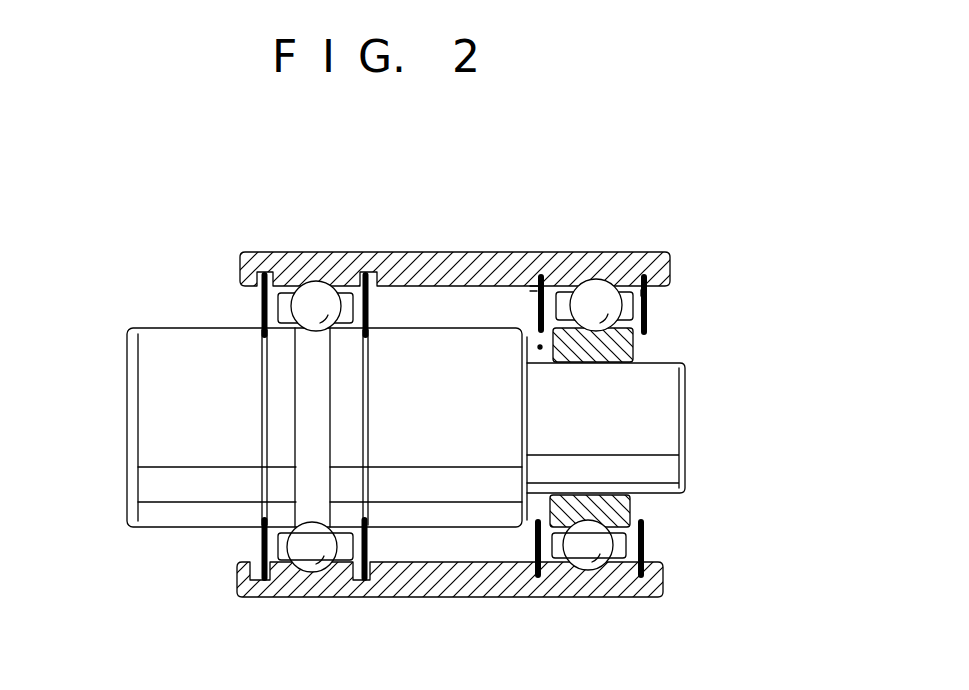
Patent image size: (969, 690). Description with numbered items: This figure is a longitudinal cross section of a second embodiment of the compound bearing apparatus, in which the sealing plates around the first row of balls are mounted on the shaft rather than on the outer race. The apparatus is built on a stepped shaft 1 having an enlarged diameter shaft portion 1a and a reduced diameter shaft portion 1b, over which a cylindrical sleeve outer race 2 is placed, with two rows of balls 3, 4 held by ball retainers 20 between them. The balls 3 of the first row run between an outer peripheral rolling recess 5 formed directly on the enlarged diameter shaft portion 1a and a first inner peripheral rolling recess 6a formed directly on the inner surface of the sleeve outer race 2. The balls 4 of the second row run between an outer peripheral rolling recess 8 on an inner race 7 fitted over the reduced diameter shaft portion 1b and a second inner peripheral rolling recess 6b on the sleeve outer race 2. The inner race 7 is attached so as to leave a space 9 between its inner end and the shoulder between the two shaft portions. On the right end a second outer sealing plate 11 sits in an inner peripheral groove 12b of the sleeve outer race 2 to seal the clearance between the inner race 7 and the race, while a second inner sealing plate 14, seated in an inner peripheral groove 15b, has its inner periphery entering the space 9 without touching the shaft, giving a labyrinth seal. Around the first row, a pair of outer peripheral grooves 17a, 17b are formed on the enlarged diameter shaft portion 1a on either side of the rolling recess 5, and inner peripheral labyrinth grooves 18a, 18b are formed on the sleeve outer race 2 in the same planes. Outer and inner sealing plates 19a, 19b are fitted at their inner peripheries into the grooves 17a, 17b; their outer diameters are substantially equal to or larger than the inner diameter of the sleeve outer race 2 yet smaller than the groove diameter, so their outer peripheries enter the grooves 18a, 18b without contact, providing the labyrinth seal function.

The stepped shaft 1 is at (407, 395).
The enlarged diameter shaft portion 1a is at (155, 385).
The reduced diameter shaft portion 1b is at (667, 412).
The sleeve outer race 2 is at (633, 262).
The balls of the first row 3 is at (268, 397).
The balls of the second row 4 is at (642, 357).
The outer peripheral rolling recess 5 is at (312, 482).
The first inner peripheral rolling recess 6a is at (321, 292).
The second inner peripheral rolling recess 6b is at (606, 290).
The inner race 7 is at (627, 347).
The outer peripheral rolling recess 8 is at (648, 318).
The space 9 is at (540, 347).
The second outer sealing plate 11 is at (620, 310).
The inner peripheral groove 12b is at (648, 295).
The second inner sealing plate 14 is at (537, 291).
The inner peripheral groove 15b is at (538, 288).
The outer peripheral groove 17a is at (260, 440).
The outer peripheral groove 17b is at (372, 440).
The inner peripheral labyrinth groove 18a is at (263, 274).
The inner peripheral labyrinth groove 18b is at (368, 274).
The outer sealing plate 19a is at (258, 315).
The inner sealing plate 19b is at (369, 315).
The ball retainers 20 is at (340, 553).